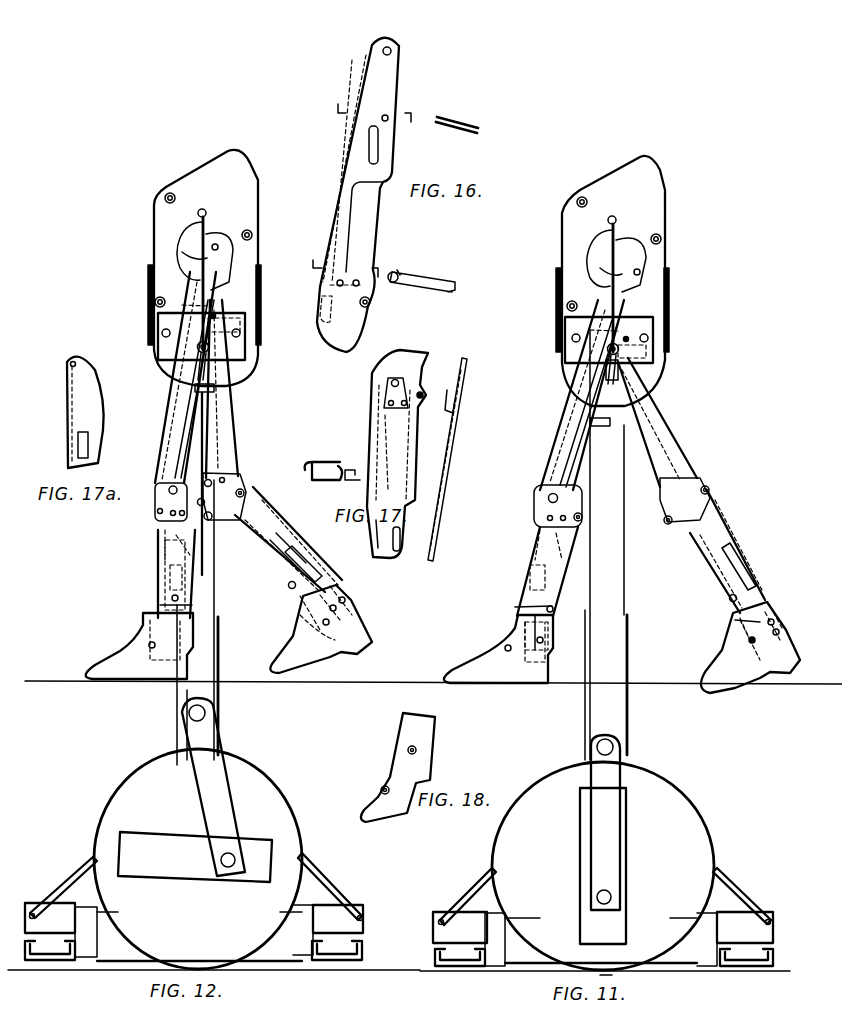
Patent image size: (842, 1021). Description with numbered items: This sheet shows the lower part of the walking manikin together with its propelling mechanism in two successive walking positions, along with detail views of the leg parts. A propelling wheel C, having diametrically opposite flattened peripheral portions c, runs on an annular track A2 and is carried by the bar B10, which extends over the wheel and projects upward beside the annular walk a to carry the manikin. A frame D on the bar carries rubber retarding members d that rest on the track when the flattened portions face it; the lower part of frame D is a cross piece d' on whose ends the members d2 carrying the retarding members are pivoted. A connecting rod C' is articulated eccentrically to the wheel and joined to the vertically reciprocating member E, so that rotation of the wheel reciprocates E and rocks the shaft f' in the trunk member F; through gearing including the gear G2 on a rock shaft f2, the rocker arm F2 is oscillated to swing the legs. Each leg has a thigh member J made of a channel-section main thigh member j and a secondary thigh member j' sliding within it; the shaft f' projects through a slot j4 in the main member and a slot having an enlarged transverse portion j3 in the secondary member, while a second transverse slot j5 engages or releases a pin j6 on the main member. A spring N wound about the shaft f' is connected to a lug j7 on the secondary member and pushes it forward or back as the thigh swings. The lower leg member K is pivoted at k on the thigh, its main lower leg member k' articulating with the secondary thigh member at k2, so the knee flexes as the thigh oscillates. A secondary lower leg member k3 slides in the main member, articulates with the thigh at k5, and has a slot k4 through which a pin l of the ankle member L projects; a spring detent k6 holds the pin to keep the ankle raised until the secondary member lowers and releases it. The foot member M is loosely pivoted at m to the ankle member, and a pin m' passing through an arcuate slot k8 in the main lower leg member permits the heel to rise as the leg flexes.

In FIG. 12, the annular walk a is at (397, 681).
In FIG. 12, the annular track A2 is at (283, 968).
In FIG. 11, the annular track A2 is at (698, 978).
In FIG. 12, the frame (bar) B10 is at (221, 727).
In FIG. 11, the frame (bar) B10 is at (630, 731).
In FIG. 12, the propelling wheel C is at (198, 859).
In FIG. 11, the propelling wheel C is at (603, 866).
In FIG. 12, the connecting rod C' is at (237, 787).
In FIG. 11, the connecting rod C' is at (650, 839).
In FIG. 12, the flattened peripheral portion c is at (95, 843).
In FIG. 11, the flattened peripheral portion c is at (579, 766).
In FIG. 12, the frame D is at (72, 875).
In FIG. 11, the frame D is at (480, 878).
In FIG. 12, the retarding member d is at (192, 970).
In FIG. 11, the retarding member d is at (604, 978).
In FIG. 12, the cross piece d' is at (339, 913).
In FIG. 11, the cross piece d' is at (735, 919).
In FIG. 12, the pivoted member d2 is at (78, 958).
In FIG. 11, the pivoted member d2 is at (693, 958).
In FIG. 12, the vertically reciprocating member E is at (184, 694).
In FIG. 11, the vertically reciprocating member E is at (602, 717).
In FIG. 12, the trunk member F is at (257, 300).
In FIG. 11, the trunk member F is at (664, 297).
In FIG. 12, the rocker arm F2 is at (250, 256).
In FIG. 11, the rocker arm F2 is at (628, 262).
In FIG. 12, the rock shaft f' is at (239, 367).
In FIG. 11, the rock shaft f' is at (571, 368).
In FIG. 12, the rock shaft f2 is at (188, 254).
In FIG. 11, the rock shaft f2 is at (608, 276).
In FIG. 12, the gear G2 is at (196, 243).
In FIG. 11, the gear G2 is at (607, 258).
In FIG. 12, the spring N is at (208, 218).
In FIG. 11, the spring N is at (617, 220).
In FIG. 12, the thigh member J is at (236, 286).
In FIG. 16, the thigh member J is at (392, 83).
In FIG. 11, the thigh member J is at (643, 311).
In FIG. 12, the main thigh member j is at (164, 381).
In FIG. 16, the main thigh member j is at (333, 171).
In FIG. 11, the main thigh member j is at (559, 396).
In FIG. 12, the secondary thigh member j' is at (178, 389).
In FIG. 11, the secondary thigh member j' is at (569, 403).
In FIG. 12, the transverse enlarged portion j3 is at (242, 323).
In FIG. 11, the transverse enlarged portion j3 is at (638, 351).
In FIG. 12, the slot j4 is at (215, 344).
In FIG. 16, the slot j4 is at (392, 147).
In FIG. 11, the slot j4 is at (622, 369).
In FIG. 12, the second transverse slot j5 is at (182, 305).
In FIG. 11, the second transverse slot j5 is at (590, 330).
In FIG. 12, the pin j6 is at (216, 316).
In FIG. 11, the pin j6 is at (629, 338).
In FIG. 12, the lug j7 is at (216, 389).
In FIG. 11, the lug j7 is at (598, 438).
In FIG. 12, the lower leg member K is at (158, 551).
In FIG. 17, the lower leg member K is at (380, 422).
In FIG. 11, the lower leg member K is at (518, 586).
In FIG. 12, the pivot k is at (189, 499).
In FIG. 17, the pivot k is at (431, 378).
In FIG. 11, the pivot k is at (658, 497).
In FIG. 12, the main lower leg member k' is at (147, 610).
In FIG. 17, the main lower leg member k' is at (380, 555).
In FIG. 11, the main lower leg member k' is at (515, 617).
In FIG. 12, the articulation point k2 is at (166, 494).
In FIG. 17, the articulation point k2 is at (392, 383).
In FIG. 11, the articulation point k2 is at (553, 499).
In FIG. 12, the secondary lower leg member k3 is at (160, 526).
In FIG. 17A, the secondary lower leg member k3 is at (70, 410).
In FIG. 11, the secondary lower leg member k3 is at (533, 525).
In FIG. 12, the slot k4 is at (160, 581).
In FIG. 17A, the slot k4 is at (78, 446).
In FIG. 11, the slot k4 is at (494, 603).
In FIG. 12, the articulation point k5 is at (203, 576).
In FIG. 17A, the articulation point k5 is at (70, 362).
In FIG. 11, the articulation point k5 is at (680, 525).
In FIG. 12, the spring detent k6 is at (302, 586).
In FIG. 11, the spring detent k6 is at (718, 554).
In FIG. 12, the slot k8 is at (348, 607).
In FIG. 17, the slot k8 is at (403, 547).
In FIG. 11, the slot k8 is at (543, 643).
In FIG. 12, the ankle member L is at (160, 568).
In FIG. 18, the ankle member L is at (428, 733).
In FIG. 11, the ankle member L is at (537, 660).
In FIG. 12, the pin l is at (172, 597).
In FIG. 18, the pin l is at (416, 750).
In FIG. 11, the pin l is at (553, 608).
In FIG. 12, the foot member M is at (126, 657).
In FIG. 11, the foot member M is at (483, 661).
In FIG. 12, the pivot m is at (217, 633).
In FIG. 18, the pivot m is at (363, 786).
In FIG. 11, the pivot m is at (608, 645).
In FIG. 11, the pin m' is at (657, 661).